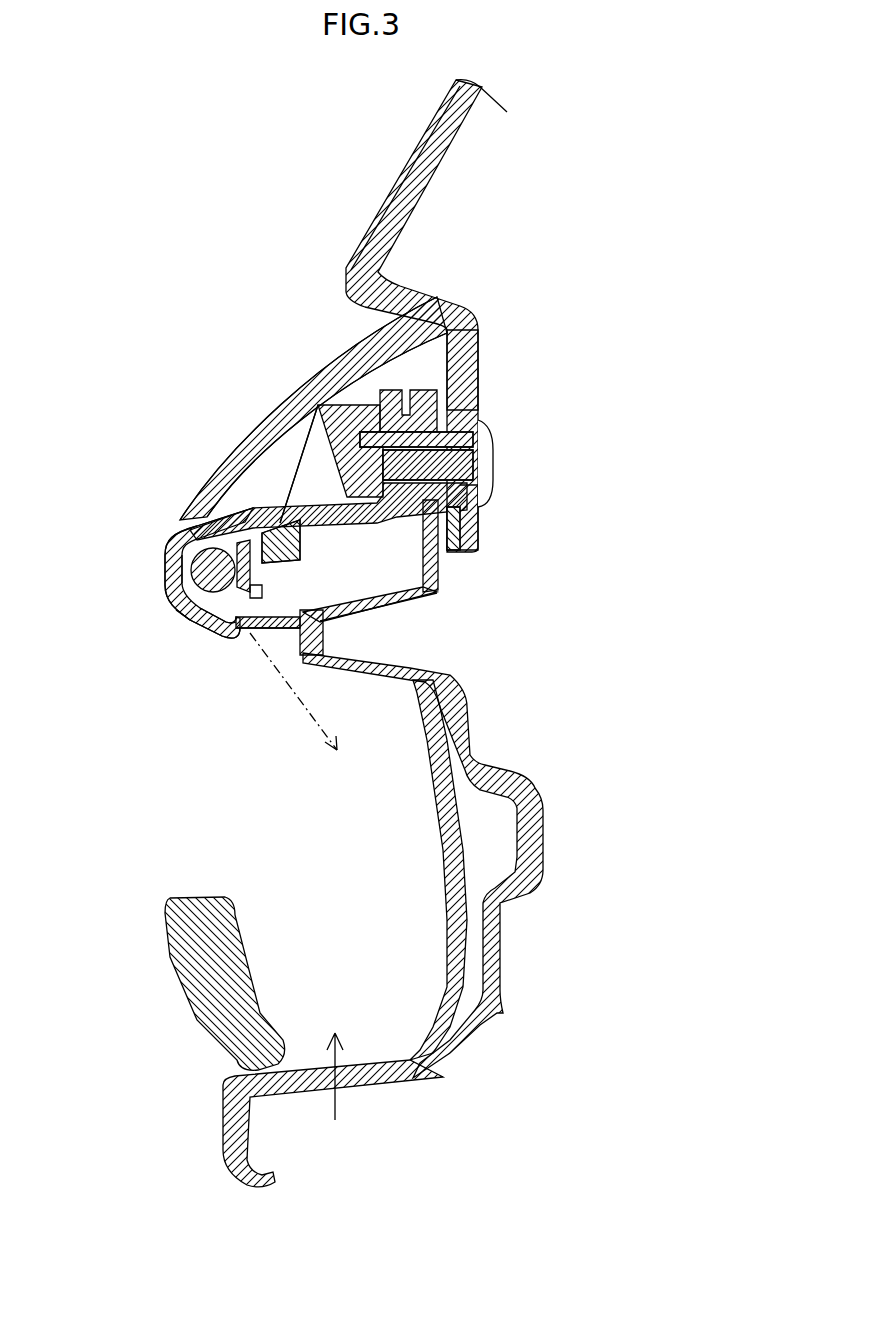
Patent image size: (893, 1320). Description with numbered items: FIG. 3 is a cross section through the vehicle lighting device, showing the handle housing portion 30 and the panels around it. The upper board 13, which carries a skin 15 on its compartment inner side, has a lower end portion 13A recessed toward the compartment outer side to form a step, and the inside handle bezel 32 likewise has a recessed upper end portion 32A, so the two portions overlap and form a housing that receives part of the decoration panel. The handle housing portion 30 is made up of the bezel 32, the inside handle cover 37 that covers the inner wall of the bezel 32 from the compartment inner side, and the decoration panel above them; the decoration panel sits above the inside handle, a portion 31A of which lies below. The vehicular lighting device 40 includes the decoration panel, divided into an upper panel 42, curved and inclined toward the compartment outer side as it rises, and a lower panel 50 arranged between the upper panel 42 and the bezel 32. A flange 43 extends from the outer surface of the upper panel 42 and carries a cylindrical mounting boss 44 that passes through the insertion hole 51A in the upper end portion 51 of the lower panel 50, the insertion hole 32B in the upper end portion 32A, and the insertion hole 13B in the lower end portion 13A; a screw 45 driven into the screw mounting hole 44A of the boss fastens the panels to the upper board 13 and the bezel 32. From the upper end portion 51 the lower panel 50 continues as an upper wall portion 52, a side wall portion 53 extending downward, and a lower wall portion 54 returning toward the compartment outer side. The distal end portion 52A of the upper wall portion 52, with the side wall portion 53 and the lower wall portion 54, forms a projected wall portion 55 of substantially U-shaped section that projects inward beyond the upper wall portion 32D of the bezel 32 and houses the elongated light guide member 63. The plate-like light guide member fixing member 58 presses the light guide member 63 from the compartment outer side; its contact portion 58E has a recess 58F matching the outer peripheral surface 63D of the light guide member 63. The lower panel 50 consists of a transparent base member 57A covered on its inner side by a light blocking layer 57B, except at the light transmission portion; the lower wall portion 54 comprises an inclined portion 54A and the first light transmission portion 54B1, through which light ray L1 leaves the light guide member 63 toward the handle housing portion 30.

The upper board 13 is at (467, 130).
The skin 15 is at (397, 180).
The lower end portion 13A is at (470, 353).
The insertion hole 13B is at (470, 490).
The upper panel 42 is at (330, 332).
The vehicular lighting device 40 is at (215, 419).
The lower panel 50 is at (220, 457).
The flange 43 is at (347, 417).
The upper wall portion 52 is at (282, 485).
The upper end portion 51 is at (390, 390).
The mounting boss 44 is at (467, 433).
The screw mounting hole 44A is at (440, 463).
The screw 45 is at (493, 443).
The light guide member fixing member 58 is at (220, 520).
The contact portion 58E is at (323, 623).
The recess 58F is at (218, 637).
The projected wall portion 55 is at (44, 545).
The base member 57A is at (200, 530).
The distal end portion 52A is at (173, 567).
The side wall portion 53 is at (173, 580).
The lower wall portion 54 is at (172, 621).
The inclined portion 54A is at (185, 617).
The light blocking layer 57B is at (232, 622).
The first light transmission portion 54B1 is at (267, 627).
The light guide member 63 is at (205, 600).
The outer peripheral surface 63D is at (250, 588).
The light ray L1 is at (295, 685).
The upper end portion 32A is at (433, 563).
The insertion hole 32B is at (460, 497).
The insertion hole 51A is at (433, 592).
The upper wall portion 32D is at (387, 600).
The inside handle bezel 32 is at (532, 812).
The inside handle cover 37 is at (433, 727).
The weather strip 31A is at (203, 983).
The handle housing portion 30 is at (336, 1092).